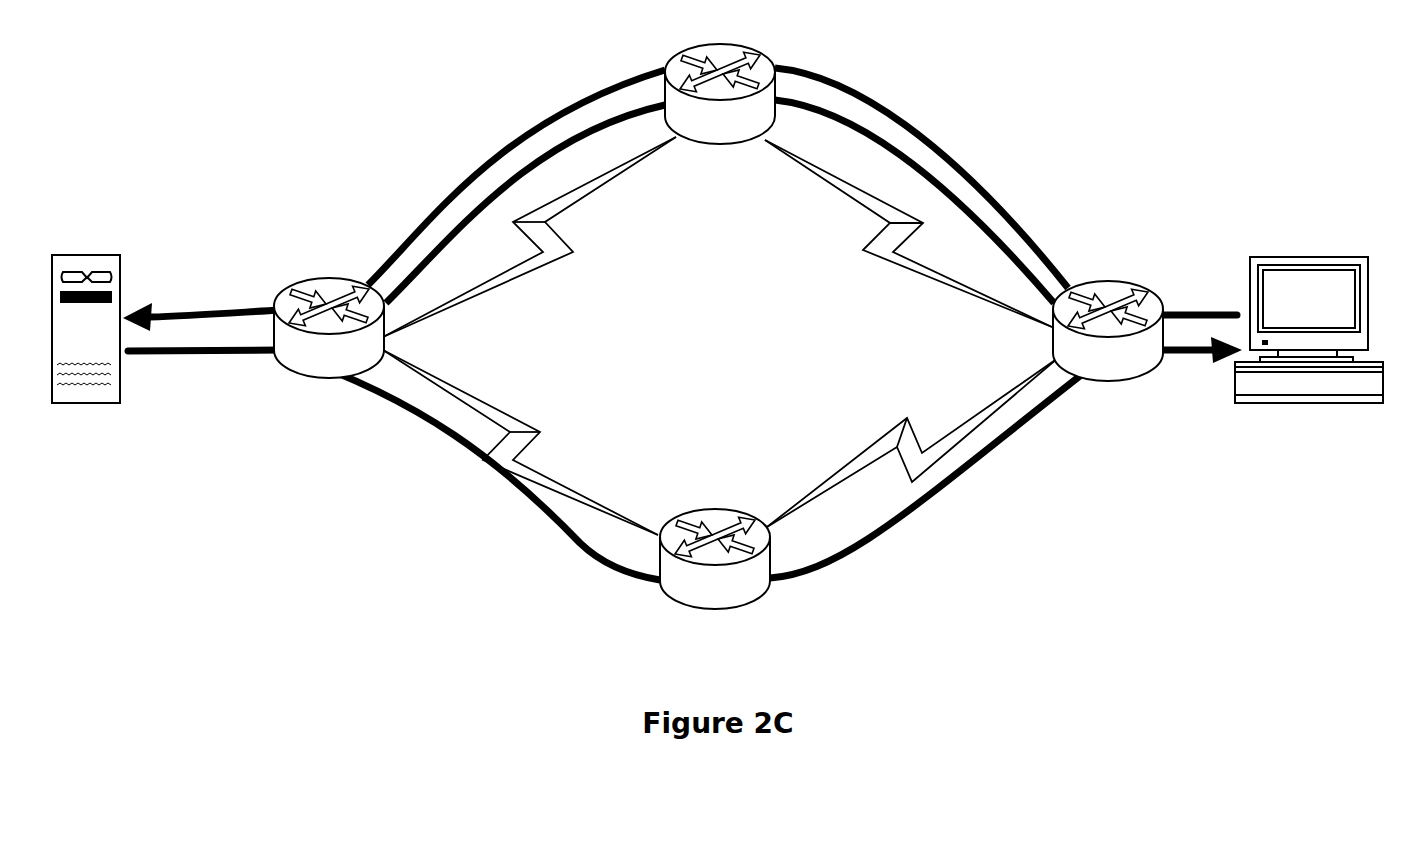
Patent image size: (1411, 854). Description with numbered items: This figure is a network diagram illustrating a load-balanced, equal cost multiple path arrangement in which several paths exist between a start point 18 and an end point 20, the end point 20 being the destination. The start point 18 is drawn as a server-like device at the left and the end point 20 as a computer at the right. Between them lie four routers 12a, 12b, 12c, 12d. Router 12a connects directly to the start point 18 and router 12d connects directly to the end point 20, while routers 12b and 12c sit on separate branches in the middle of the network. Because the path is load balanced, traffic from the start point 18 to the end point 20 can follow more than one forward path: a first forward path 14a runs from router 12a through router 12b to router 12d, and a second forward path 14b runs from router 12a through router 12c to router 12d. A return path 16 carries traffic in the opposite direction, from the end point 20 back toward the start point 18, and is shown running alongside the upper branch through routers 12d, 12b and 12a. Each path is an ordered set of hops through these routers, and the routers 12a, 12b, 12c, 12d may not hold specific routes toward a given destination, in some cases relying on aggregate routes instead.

The router 12a is at (311, 360).
The router 12b is at (702, 128).
The router 12c is at (697, 596).
The router 12d is at (1090, 365).
The forward path 14a is at (958, 192).
The forward path 14b is at (891, 521).
The return path 16 is at (880, 105).
The start point 18 is at (74, 350).
The end point 20 is at (1291, 315).